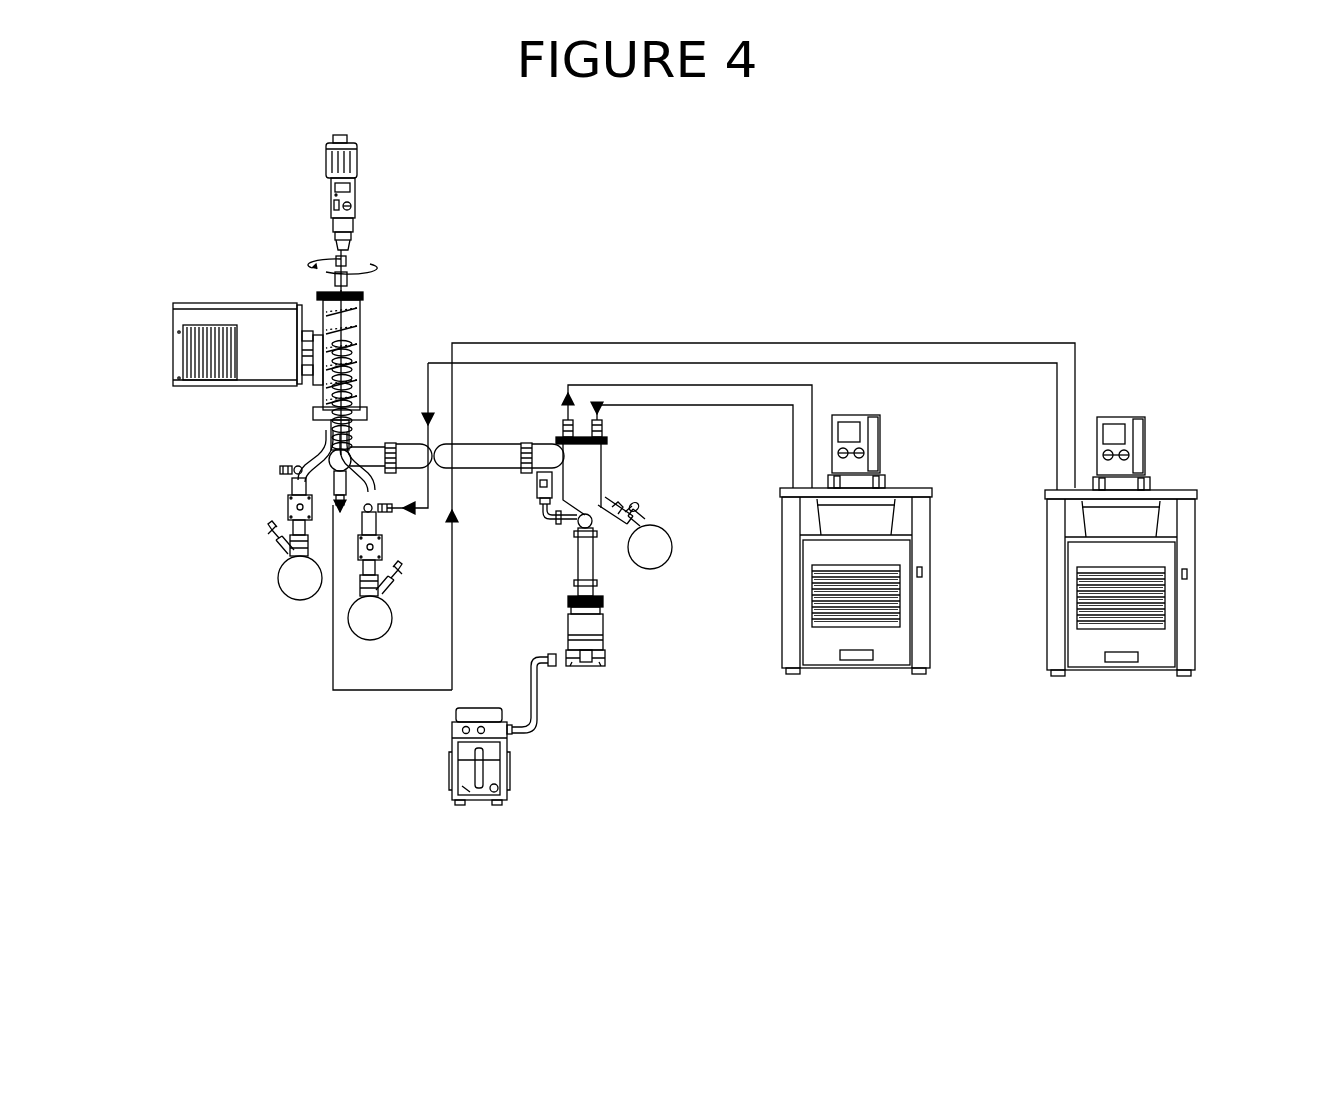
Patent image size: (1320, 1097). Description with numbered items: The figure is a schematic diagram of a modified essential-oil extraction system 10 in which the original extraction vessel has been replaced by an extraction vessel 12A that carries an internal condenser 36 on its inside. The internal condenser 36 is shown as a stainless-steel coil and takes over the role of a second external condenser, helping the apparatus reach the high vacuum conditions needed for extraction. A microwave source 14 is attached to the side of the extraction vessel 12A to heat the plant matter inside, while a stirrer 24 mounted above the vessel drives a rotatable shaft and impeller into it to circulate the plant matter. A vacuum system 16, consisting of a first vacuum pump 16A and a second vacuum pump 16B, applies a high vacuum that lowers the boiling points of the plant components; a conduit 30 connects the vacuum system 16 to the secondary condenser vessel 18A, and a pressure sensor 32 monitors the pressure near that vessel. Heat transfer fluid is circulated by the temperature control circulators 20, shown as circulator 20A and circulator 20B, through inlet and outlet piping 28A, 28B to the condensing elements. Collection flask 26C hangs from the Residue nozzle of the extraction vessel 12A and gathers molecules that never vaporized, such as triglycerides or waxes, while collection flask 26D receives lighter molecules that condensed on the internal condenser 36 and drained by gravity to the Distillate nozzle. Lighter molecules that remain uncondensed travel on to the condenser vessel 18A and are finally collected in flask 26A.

The system 10 is at (648, 293).
The extraction vessel 12A is at (443, 356).
The microwave source 14 is at (175, 307).
The vacuum system 16 is at (526, 730).
The first vacuum pump 16A is at (440, 785).
The second vacuum pump 16B is at (612, 651).
The condenser vessel 18A is at (606, 482).
The temperature control circulator 20 is at (1044, 610).
The temperature control circulator 20A is at (935, 630).
The temperature control circulator 20B is at (1198, 630).
The stirrer 24 is at (370, 165).
The collection flask 26A is at (668, 565).
The collection flask 26C is at (282, 590).
The collection flask 26D is at (350, 638).
The inlet and outlet piping 28A is at (820, 395).
The inlet and outlet piping 28B is at (772, 338).
The conduit 30 is at (576, 553).
The pressure sensor 32 is at (534, 488).
The internal condenser 36 is at (357, 352).